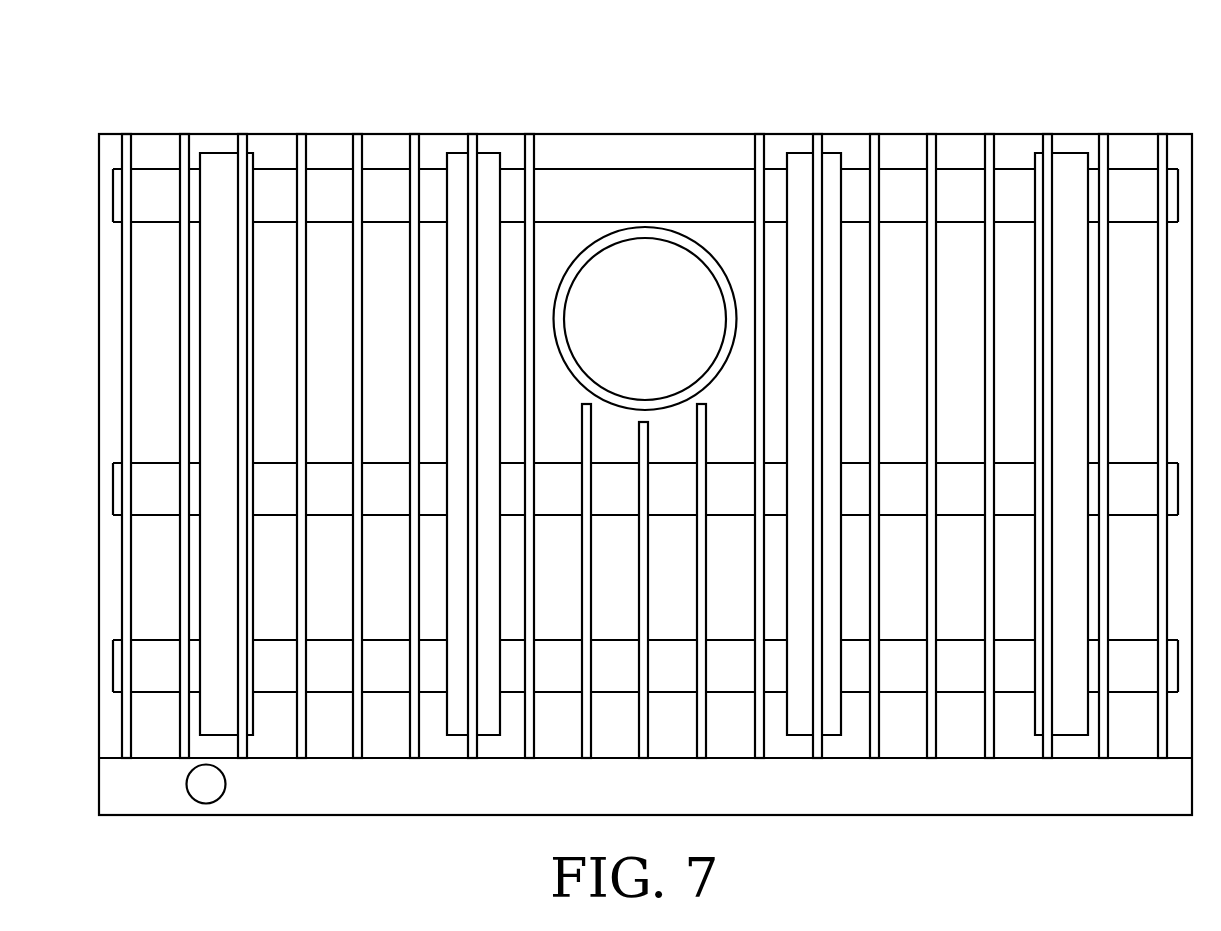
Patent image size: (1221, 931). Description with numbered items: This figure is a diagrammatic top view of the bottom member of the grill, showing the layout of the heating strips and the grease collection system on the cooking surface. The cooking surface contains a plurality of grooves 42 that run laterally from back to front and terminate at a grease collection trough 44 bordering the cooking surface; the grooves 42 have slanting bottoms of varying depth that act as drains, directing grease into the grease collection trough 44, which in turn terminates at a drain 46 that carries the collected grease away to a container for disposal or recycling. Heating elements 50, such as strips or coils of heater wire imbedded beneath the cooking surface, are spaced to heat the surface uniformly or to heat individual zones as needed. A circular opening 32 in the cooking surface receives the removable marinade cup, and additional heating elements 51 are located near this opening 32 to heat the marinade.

The opening 32 is at (623, 297).
The grooves 42 is at (406, 236).
The grease collection trough 44 is at (891, 800).
The drain 46 is at (218, 825).
The heating elements 50 is at (333, 697).
The heating elements near marinade cup 51 is at (697, 215).